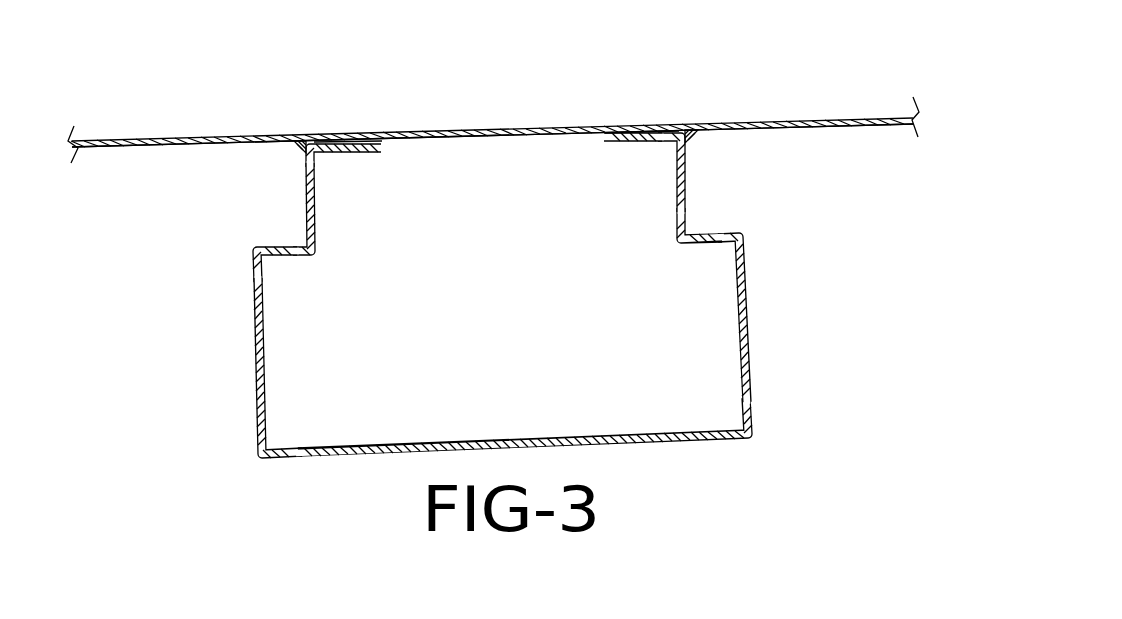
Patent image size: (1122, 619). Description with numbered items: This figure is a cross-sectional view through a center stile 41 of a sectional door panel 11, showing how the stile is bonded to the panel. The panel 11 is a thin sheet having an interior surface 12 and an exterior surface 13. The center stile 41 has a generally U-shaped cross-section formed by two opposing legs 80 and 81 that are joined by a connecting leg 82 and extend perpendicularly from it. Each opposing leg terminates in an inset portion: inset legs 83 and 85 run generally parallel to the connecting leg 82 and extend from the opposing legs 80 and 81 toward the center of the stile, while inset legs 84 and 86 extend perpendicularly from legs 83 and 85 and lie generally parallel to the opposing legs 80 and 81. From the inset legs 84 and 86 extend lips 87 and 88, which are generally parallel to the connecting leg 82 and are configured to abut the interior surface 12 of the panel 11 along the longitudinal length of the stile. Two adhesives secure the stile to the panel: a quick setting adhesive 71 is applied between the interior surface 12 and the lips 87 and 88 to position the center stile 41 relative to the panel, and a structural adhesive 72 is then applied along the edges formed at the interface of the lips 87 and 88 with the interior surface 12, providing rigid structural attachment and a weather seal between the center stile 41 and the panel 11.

The panel 11 is at (493, 114).
The interior surface 12 is at (497, 137).
The exterior surface 13 is at (493, 131).
The center stile 41 is at (488, 295).
The quick setting adhesive 71 is at (390, 146).
The structural adhesive 72 is at (302, 152).
The opposing leg 80 is at (748, 345).
The opposing leg 81 is at (258, 364).
The connecting leg 82 is at (504, 440).
The inset leg 83 is at (708, 241).
The inset leg 84 is at (685, 193).
The inset leg 85 is at (287, 250).
The inset leg 86 is at (307, 206).
The lip 87 is at (623, 141).
The lip 88 is at (363, 153).